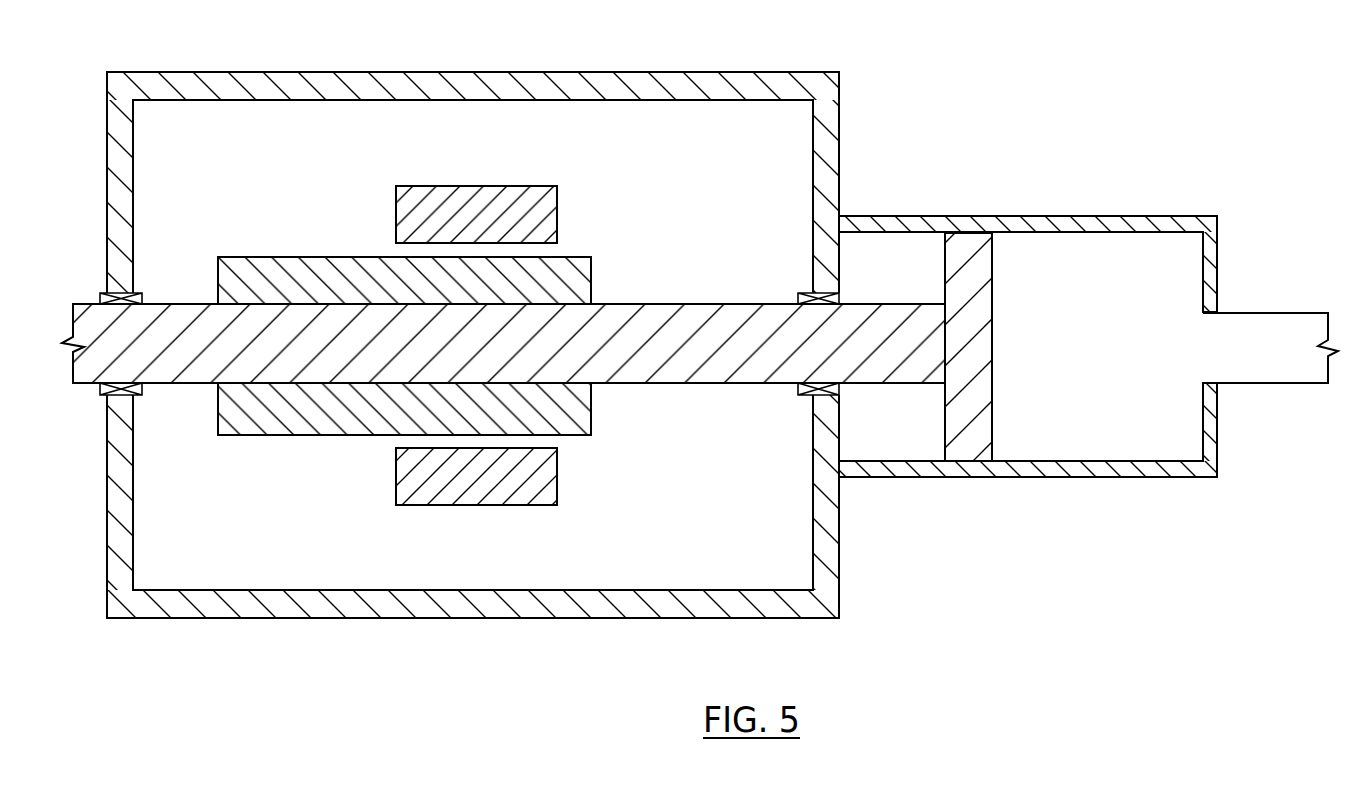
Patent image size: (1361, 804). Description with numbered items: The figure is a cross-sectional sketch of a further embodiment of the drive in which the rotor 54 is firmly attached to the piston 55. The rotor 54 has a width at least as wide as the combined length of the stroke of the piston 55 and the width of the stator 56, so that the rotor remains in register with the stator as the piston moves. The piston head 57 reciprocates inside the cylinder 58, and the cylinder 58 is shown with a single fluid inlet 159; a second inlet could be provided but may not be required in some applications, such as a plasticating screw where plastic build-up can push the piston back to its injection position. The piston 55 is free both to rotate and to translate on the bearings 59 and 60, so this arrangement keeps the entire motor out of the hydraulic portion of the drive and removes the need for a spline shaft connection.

The rotor 54 is at (590, 280).
The piston 55 is at (662, 366).
The stator 56 is at (556, 200).
The piston head 57 is at (977, 352).
The cylinder 58 is at (1089, 222).
The bearing 59 is at (147, 297).
The bearing 60 is at (800, 300).
The fluid inlet 159 is at (1277, 337).